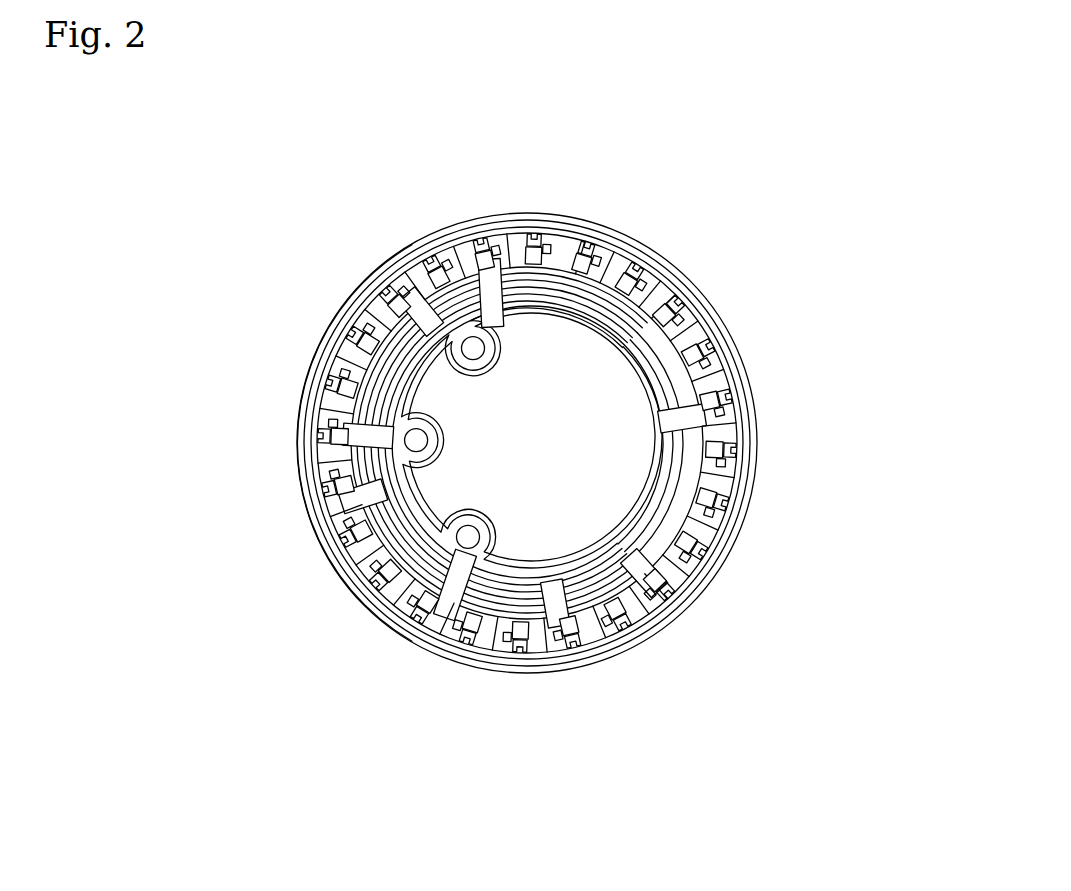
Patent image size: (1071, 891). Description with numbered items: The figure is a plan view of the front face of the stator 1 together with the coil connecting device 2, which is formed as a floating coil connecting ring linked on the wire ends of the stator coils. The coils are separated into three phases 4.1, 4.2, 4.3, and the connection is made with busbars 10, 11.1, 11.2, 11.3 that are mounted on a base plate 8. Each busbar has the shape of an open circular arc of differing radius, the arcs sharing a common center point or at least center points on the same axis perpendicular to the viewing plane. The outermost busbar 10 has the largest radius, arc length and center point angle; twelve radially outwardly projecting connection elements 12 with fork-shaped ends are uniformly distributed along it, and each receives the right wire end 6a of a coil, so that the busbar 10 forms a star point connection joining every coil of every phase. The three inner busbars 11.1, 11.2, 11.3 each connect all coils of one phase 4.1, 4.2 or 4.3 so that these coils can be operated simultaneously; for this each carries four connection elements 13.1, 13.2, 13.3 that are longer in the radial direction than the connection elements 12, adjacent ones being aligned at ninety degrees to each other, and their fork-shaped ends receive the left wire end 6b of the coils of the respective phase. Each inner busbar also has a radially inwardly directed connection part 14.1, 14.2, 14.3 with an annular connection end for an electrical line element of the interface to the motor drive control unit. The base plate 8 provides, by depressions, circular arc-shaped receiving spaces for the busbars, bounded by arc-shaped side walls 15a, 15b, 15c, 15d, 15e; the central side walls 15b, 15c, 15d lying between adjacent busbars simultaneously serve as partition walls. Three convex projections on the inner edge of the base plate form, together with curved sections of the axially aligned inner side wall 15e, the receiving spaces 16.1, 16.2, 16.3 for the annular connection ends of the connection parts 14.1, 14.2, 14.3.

The stator 1 is at (242, 182).
The coil connecting device 2 is at (318, 512).
The phase 4.1 is at (868, 510).
The phase 4.2 is at (853, 280).
The phase 4.3 is at (856, 383).
The wire end 6a is at (537, 242).
The wire end 6b is at (487, 245).
The base plate 8 is at (320, 445).
The busbar 10 is at (343, 330).
The busbar 11.1 is at (340, 556).
The busbar 11.2 is at (317, 343).
The busbar 11.3 is at (318, 380).
The connection element 12 is at (735, 380).
The connection element 13.1 is at (572, 270).
The connection element 13.2 is at (665, 303).
The connection element 13.3 is at (605, 640).
The connection part 14.1 is at (335, 418).
The connection part 14.2 is at (452, 612).
The connection part 14.3 is at (420, 275).
The side wall 15a is at (578, 338).
The side wall 15b is at (645, 612).
The side wall 15c is at (357, 590).
The side wall 15d is at (347, 297).
The inner side wall 15e is at (588, 322).
The receiving space 16.1 is at (318, 452).
The receiving space 16.2 is at (492, 615).
The receiving space 16.3 is at (395, 300).